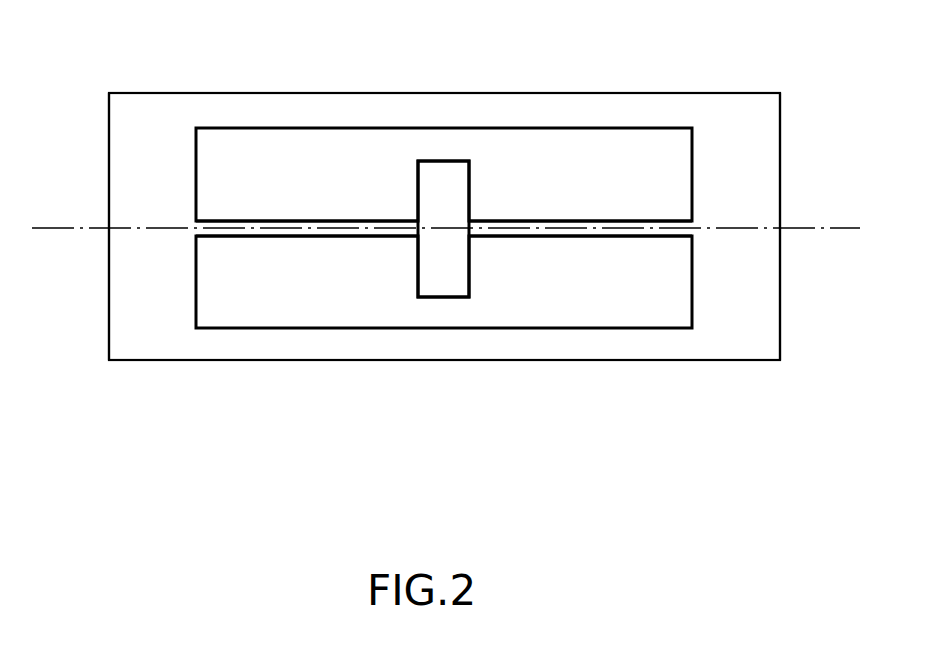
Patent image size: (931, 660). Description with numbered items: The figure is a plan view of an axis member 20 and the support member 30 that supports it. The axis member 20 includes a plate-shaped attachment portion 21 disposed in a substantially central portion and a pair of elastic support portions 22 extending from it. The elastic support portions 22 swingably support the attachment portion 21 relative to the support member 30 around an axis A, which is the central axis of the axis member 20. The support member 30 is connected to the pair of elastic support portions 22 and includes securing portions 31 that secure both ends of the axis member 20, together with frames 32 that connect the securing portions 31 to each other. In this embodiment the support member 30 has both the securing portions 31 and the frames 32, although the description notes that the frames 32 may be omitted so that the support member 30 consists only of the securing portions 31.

The axis member 20 is at (298, 240).
The attachment portion 21 is at (460, 198).
The elastic support portions 22 is at (275, 229).
The support member 30 is at (220, 362).
The securing portions 31 is at (138, 136).
The frames 32 is at (306, 107).
The axis A is at (72, 233).